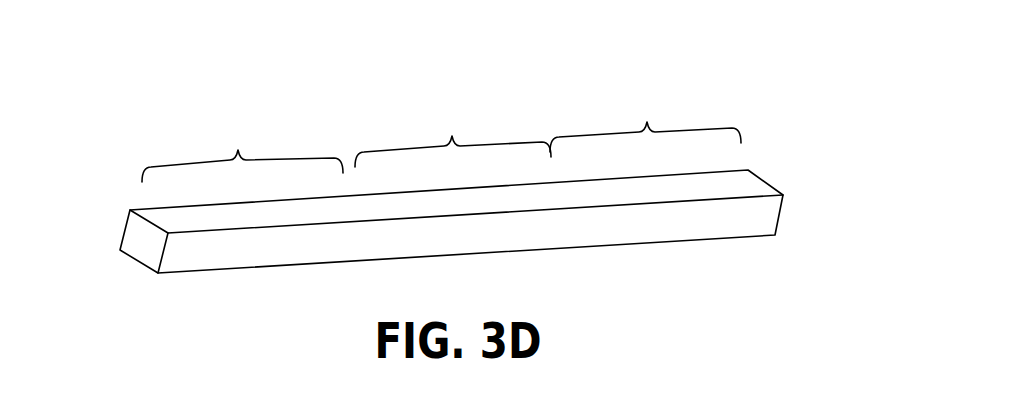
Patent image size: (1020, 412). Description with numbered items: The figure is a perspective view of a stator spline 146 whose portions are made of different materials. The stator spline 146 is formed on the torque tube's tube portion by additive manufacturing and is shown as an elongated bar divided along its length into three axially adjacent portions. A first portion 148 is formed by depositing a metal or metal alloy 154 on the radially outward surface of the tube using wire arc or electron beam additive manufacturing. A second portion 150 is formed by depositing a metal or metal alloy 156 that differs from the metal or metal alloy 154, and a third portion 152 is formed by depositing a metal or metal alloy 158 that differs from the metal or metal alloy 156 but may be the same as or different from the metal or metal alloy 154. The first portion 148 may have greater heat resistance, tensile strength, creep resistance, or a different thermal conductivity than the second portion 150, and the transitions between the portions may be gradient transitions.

The stator spline 146 is at (116, 124).
The first portion 148 is at (242, 150).
The second portion 150 is at (453, 138).
The third portion 152 is at (645, 126).
The metal or metal alloy 154 is at (195, 261).
The metal or metal alloy 156 is at (424, 248).
The metal or metal alloy 158 is at (654, 230).